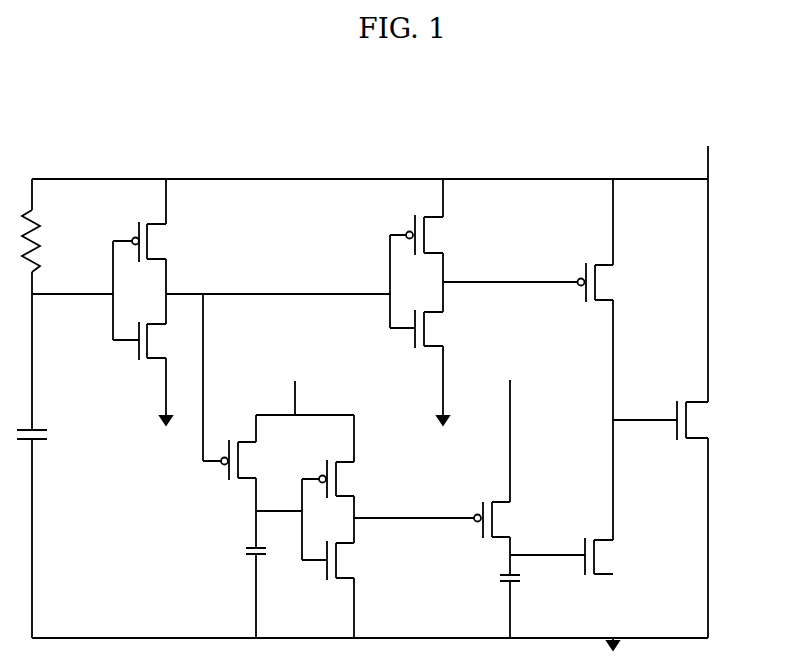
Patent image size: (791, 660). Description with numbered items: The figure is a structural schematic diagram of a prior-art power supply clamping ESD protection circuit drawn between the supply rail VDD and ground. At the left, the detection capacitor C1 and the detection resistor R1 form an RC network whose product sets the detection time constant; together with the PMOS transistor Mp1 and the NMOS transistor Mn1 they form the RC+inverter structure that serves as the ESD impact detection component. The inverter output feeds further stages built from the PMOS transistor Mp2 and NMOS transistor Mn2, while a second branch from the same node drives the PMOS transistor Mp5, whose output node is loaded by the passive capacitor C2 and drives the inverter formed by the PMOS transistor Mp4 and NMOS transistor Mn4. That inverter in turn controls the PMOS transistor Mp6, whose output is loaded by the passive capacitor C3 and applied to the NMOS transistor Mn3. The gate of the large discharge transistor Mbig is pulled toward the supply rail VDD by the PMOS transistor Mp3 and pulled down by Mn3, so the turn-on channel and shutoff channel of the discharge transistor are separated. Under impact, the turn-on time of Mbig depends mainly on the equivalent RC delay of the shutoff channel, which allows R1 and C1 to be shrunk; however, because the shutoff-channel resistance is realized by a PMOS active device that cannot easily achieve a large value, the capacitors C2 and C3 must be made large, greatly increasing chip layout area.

The ESD impact detection resistor R1 is at (46, 241).
The ESD impact detection capacitor C1 is at (46, 439).
The passive capacitor C2 is at (268, 554).
The passive capacitor C3 is at (522, 582).
The PMOS transistor of RC+inverter structure Mp1 is at (154, 242).
The NMOS transistor of RC+inverter structure Mn1 is at (154, 373).
The PMOS transistor Mp2 is at (431, 235).
The NMOS transistor Mn2 is at (431, 367).
The PMOS transistor Mp3 is at (610, 282).
The NMOS transistor Mn3 is at (613, 594).
The PMOS transistor Mp4 is at (341, 479).
The NMOS transistor Mn4 is at (341, 560).
The PMOS transistor Mp5 is at (244, 460).
The PMOS transistor Mp6 is at (506, 520).
The discharge transistor Mbig is at (708, 420).
The power supply rail VDD is at (725, 146).